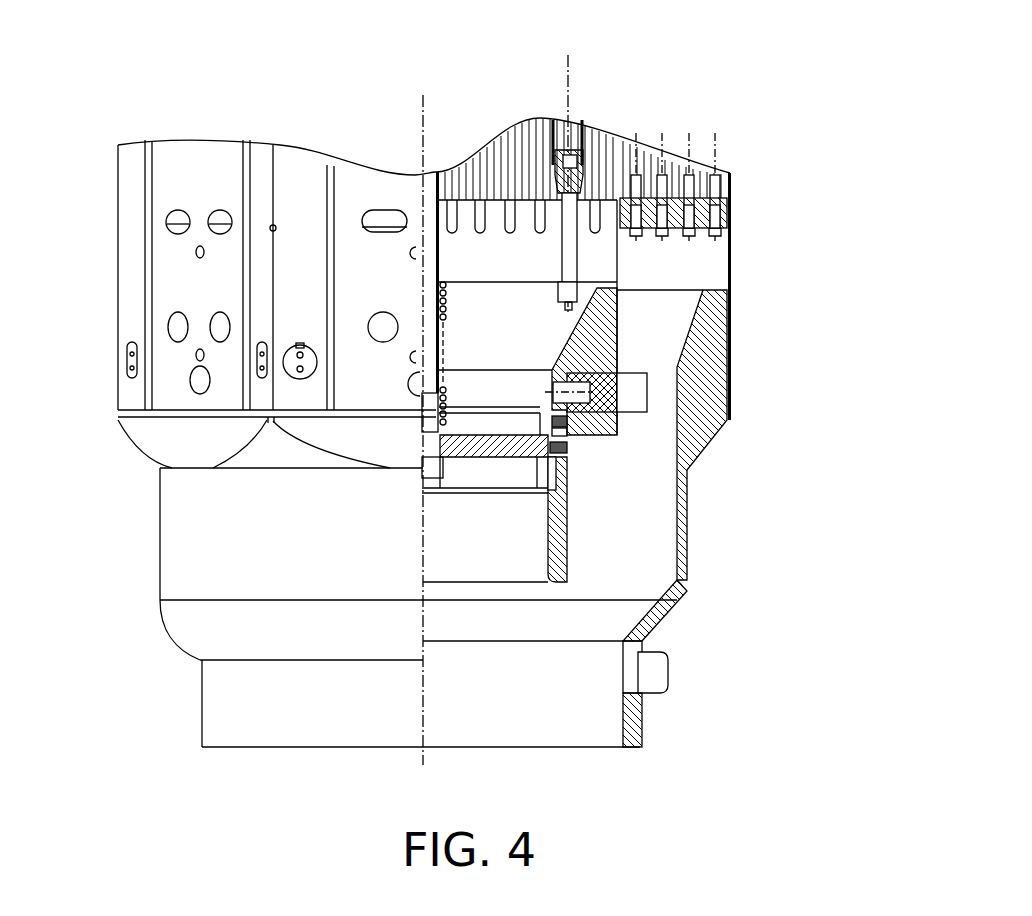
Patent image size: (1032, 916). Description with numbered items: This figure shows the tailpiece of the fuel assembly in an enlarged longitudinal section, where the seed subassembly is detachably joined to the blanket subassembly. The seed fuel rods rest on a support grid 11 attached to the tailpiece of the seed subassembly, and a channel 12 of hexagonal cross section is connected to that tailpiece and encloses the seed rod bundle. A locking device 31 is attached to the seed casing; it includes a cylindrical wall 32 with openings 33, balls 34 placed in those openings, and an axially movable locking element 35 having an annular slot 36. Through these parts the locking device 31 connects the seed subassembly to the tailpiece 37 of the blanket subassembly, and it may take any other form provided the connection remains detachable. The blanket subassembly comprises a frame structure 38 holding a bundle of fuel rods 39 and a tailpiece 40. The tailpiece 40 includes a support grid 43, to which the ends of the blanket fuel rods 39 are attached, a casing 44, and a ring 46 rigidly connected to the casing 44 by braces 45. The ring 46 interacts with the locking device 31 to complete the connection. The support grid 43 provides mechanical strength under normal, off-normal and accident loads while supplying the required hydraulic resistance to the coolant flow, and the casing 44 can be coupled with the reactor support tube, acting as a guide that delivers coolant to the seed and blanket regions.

The support grid 11 is at (593, 250).
The channel 12 is at (615, 262).
The locking device 31 is at (588, 352).
The cylindrical wall 32 is at (558, 558).
The openings 33 is at (565, 452).
The balls 34 is at (562, 433).
The locking element 35 is at (512, 445).
The annular slot 36 is at (547, 463).
The tailpiece of the blanket subassembly 37 is at (143, 548).
The frame structure 38 is at (263, 172).
The fuel rods 39 is at (688, 172).
The tailpiece 40 is at (703, 430).
The support grid 43 is at (703, 215).
The casing 44 is at (648, 623).
The braces 45 is at (633, 392).
The ring 46 is at (602, 418).